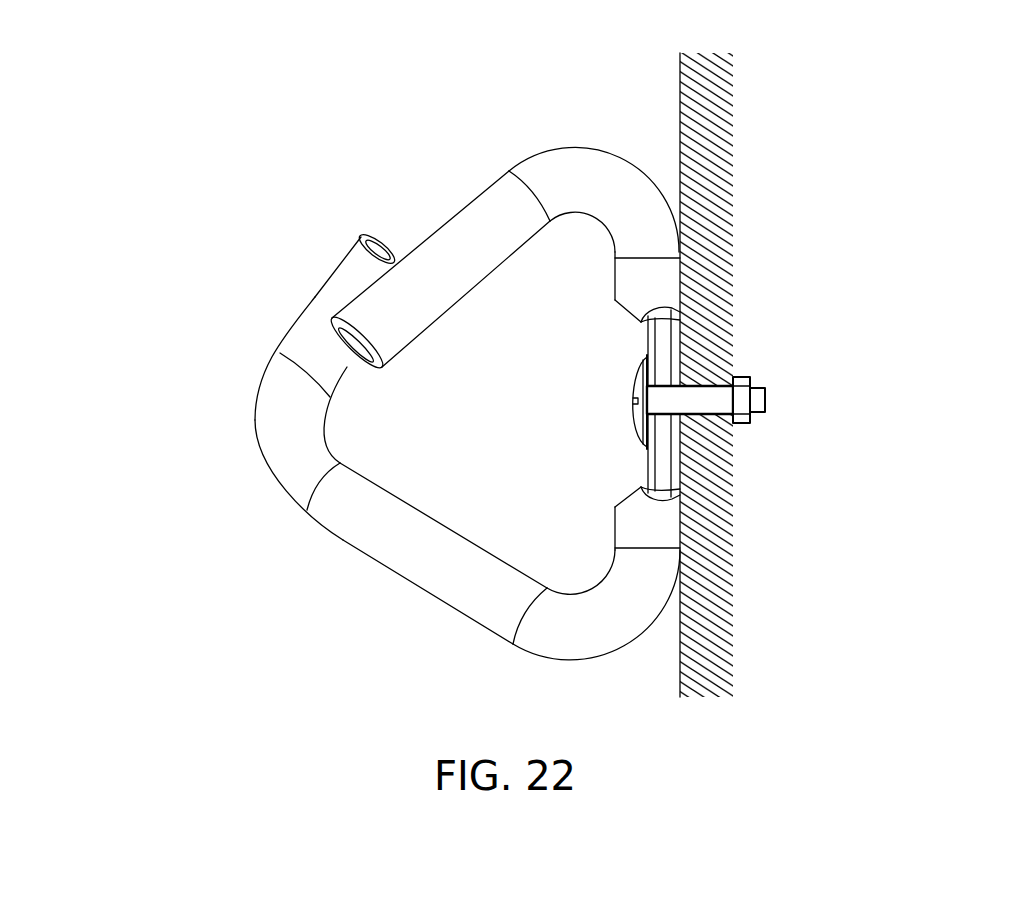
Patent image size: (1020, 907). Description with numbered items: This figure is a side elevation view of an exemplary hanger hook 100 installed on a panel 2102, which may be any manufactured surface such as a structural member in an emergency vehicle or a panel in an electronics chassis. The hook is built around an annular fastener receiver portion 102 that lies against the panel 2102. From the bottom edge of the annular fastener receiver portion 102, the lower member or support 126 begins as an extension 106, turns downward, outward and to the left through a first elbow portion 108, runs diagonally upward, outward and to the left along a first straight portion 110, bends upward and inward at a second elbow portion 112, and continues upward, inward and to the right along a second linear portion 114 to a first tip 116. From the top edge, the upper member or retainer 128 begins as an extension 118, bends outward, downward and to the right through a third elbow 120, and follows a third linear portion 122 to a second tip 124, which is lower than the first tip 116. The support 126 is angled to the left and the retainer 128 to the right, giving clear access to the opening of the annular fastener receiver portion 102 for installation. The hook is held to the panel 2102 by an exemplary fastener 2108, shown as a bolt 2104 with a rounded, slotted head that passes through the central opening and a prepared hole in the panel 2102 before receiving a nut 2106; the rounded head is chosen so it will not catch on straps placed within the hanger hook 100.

The hanger hook 100 is at (220, 624).
The annular fastener receiver portion 102 is at (648, 460).
The extension 106 is at (618, 520).
The first elbow portion 108 is at (617, 594).
The first straight portion 110 is at (378, 566).
The second elbow portion 112 is at (279, 458).
The second linear portion 114 is at (312, 308).
The first tip 116 is at (384, 252).
The extension 118 is at (620, 290).
The third elbow 120 is at (531, 172).
The third linear portion 122 is at (499, 196).
The second tip 124 is at (360, 366).
The support 126 is at (268, 519).
The retainer 128 is at (549, 120).
The panel 2102 is at (680, 70).
The bolt 2104 is at (632, 388).
The nut 2106 is at (742, 377).
The fastener 2108 is at (757, 441).